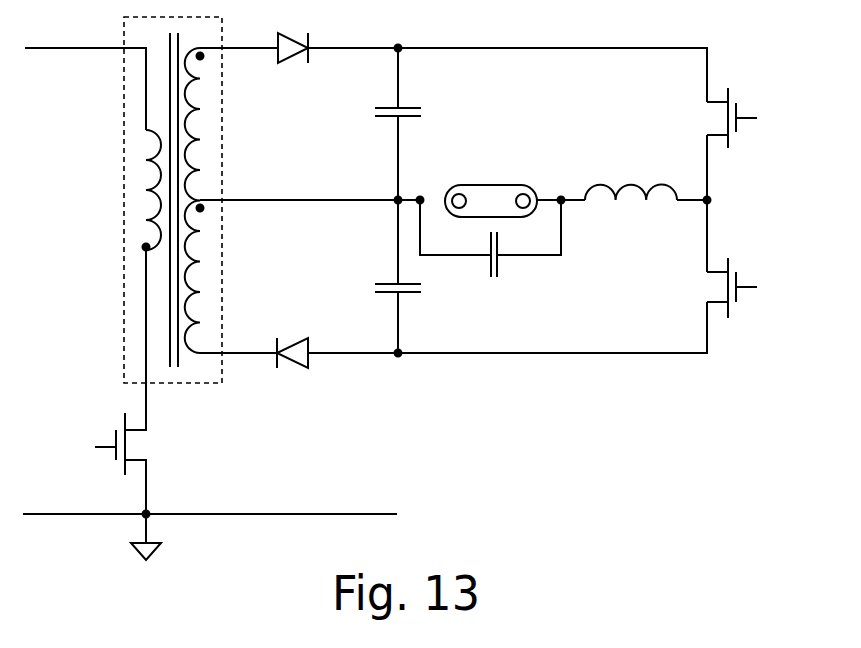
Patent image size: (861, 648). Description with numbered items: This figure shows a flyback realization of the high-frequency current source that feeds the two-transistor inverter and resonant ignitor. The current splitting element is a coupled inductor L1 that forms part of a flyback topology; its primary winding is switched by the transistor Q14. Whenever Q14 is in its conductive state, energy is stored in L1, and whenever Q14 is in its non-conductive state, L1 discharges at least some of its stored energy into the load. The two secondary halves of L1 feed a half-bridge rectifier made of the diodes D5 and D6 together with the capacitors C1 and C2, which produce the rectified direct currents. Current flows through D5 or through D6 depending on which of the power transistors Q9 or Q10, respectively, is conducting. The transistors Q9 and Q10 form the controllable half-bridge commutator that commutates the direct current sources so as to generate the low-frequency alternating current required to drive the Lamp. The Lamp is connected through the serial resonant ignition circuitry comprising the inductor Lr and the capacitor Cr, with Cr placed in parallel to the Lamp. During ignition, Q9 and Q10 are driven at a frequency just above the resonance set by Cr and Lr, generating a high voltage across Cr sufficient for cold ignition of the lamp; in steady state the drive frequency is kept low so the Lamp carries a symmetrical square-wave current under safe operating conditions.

The coupled inductor L1 is at (151, 200).
The rectifying diode D5 is at (272, 31).
The rectifying diode D6 is at (271, 374).
The capacitor C1 is at (380, 124).
The capacitor C2 is at (380, 276).
The resonant capacitor Cr is at (490, 252).
The resonant inductor Lr is at (631, 171).
The HID lamp Lamp is at (492, 178).
The power transistor Q9 is at (754, 107).
The power transistor Q10 is at (761, 277).
The flyback transistor Q14 is at (90, 435).